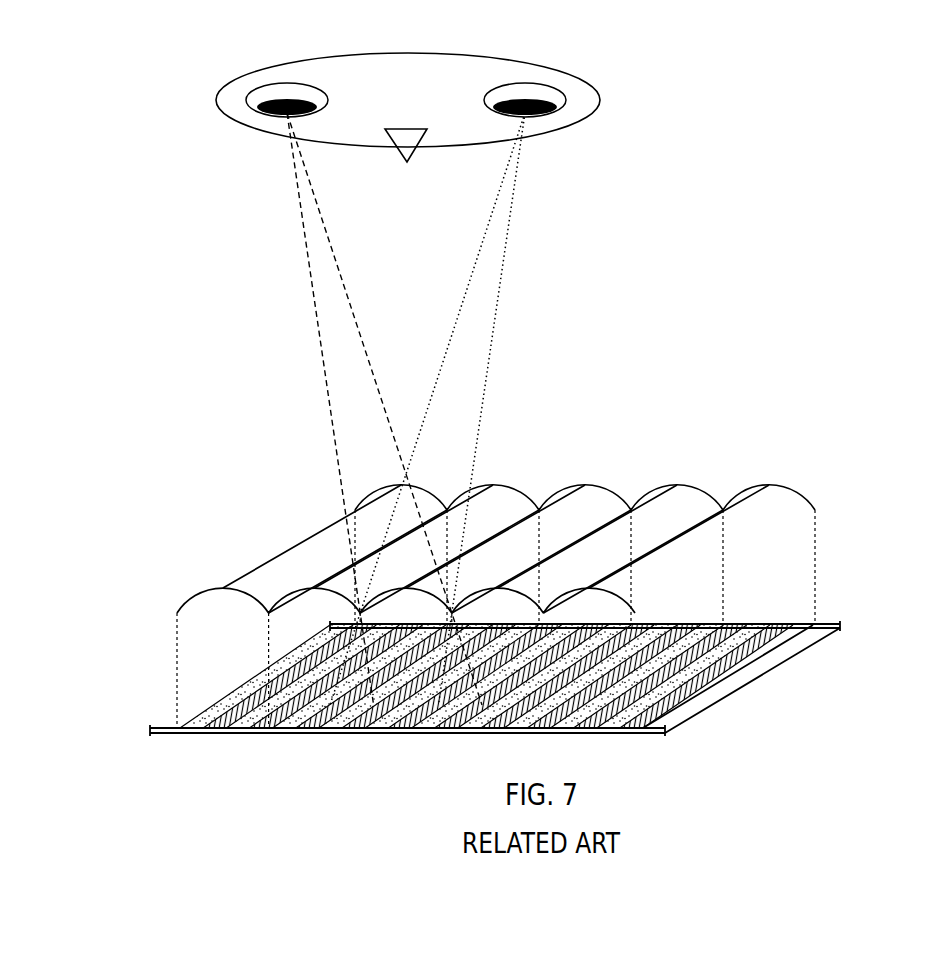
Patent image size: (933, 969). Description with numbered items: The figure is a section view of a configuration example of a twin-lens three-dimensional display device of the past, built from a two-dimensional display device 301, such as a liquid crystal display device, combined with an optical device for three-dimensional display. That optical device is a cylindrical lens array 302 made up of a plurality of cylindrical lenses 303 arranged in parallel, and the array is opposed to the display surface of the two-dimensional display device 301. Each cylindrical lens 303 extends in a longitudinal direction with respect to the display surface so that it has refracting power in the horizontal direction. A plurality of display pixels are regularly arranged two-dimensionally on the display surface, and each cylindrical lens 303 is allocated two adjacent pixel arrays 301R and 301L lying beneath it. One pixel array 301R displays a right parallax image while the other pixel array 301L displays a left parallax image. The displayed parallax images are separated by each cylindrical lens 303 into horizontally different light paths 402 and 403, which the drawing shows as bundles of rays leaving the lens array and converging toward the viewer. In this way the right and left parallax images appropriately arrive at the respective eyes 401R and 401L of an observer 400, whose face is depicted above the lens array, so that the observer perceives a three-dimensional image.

The observer 400 is at (503, 58).
The right eye of observer 401R is at (238, 101).
The left eye of observer 401L is at (599, 104).
The light path 402 is at (315, 315).
The light path 403 is at (497, 316).
The cylindrical lens array 302 is at (832, 542).
The cylindrical lens 303 is at (803, 492).
The two-dimensional display device 301 is at (516, 702).
The pixel array 301L is at (384, 738).
The pixel array 301R is at (444, 738).